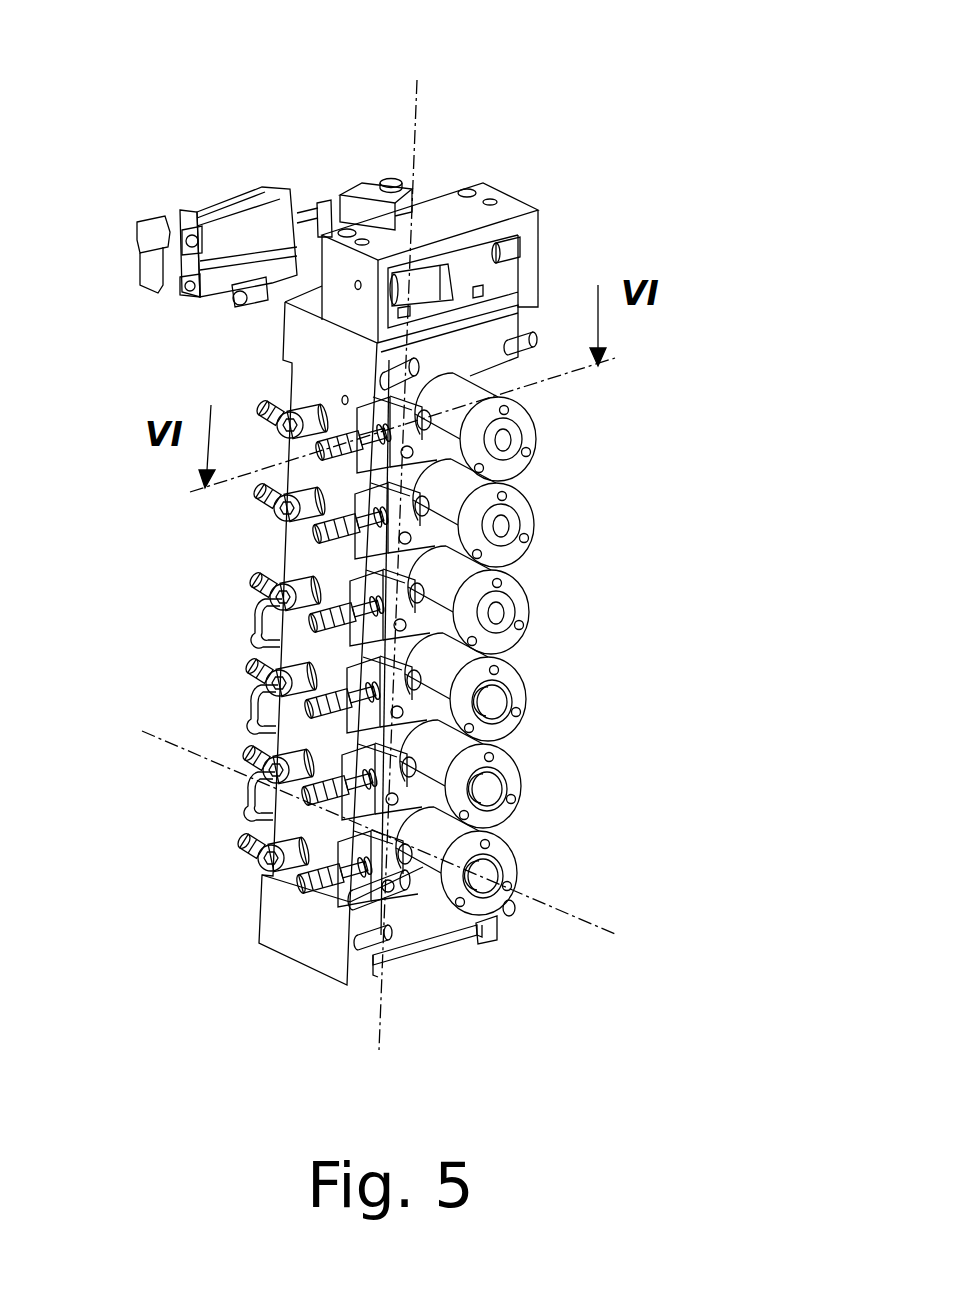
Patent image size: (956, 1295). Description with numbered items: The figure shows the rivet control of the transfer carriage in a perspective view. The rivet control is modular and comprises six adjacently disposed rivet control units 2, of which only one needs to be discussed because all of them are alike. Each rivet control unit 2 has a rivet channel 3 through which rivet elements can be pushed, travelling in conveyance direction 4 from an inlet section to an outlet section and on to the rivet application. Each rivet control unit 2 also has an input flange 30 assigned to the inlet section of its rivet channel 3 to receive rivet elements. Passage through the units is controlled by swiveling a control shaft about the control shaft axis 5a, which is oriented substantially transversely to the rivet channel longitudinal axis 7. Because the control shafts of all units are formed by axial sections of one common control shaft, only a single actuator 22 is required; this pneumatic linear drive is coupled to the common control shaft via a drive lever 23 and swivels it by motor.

The rivet control unit 2 is at (557, 582).
The rivet channel 3 is at (236, 772).
The conveyance direction 4 is at (556, 727).
The control shaft axis 5a is at (416, 118).
The rivet channel longitudinal axis 7 is at (590, 920).
The actuator 22 is at (255, 160).
The drive lever 23 is at (440, 287).
The input flange 30 is at (492, 907).